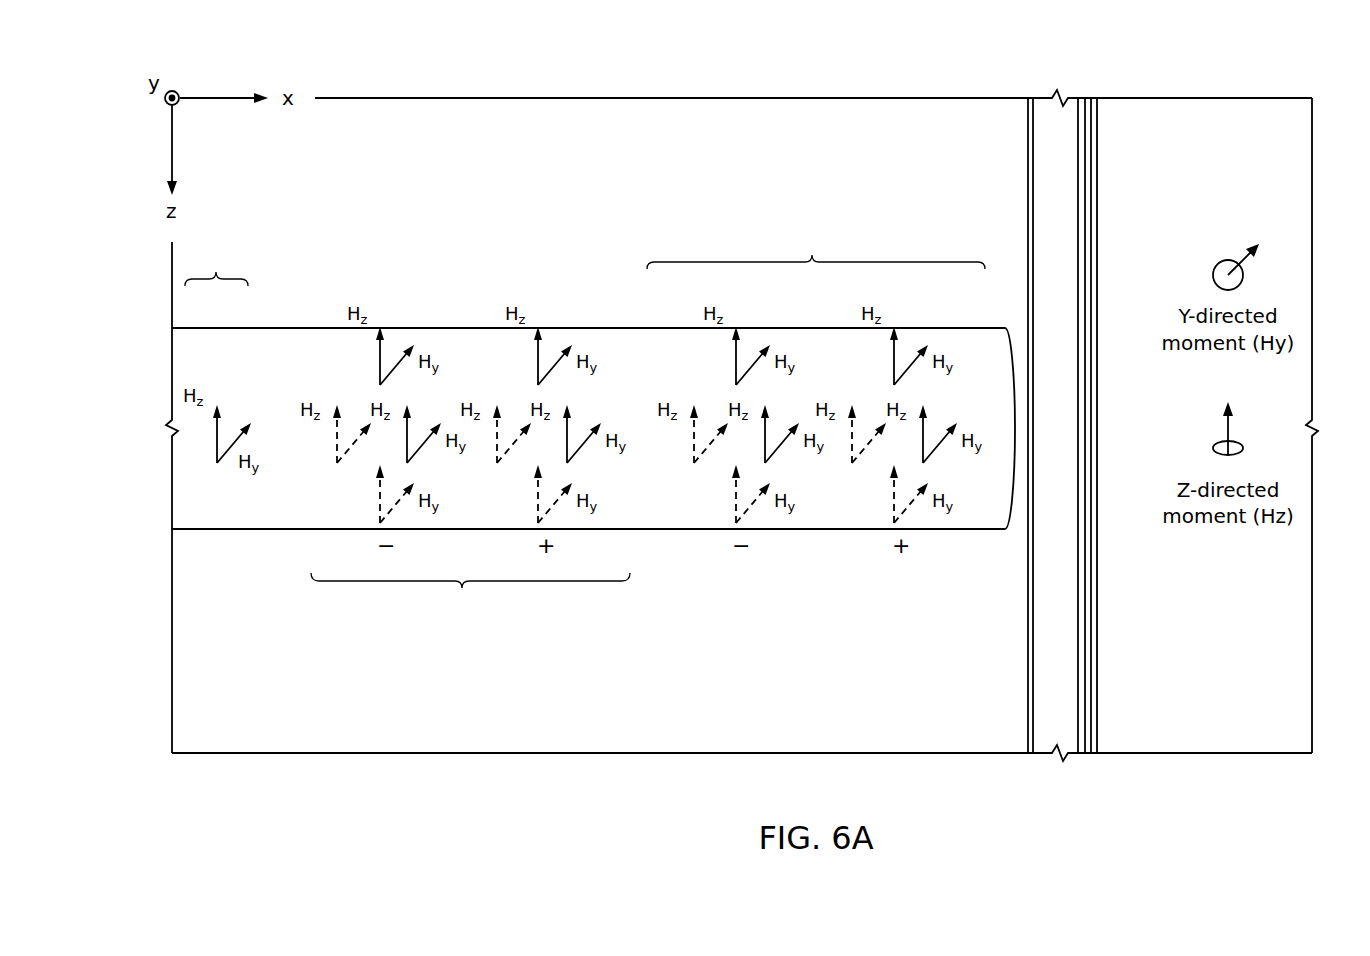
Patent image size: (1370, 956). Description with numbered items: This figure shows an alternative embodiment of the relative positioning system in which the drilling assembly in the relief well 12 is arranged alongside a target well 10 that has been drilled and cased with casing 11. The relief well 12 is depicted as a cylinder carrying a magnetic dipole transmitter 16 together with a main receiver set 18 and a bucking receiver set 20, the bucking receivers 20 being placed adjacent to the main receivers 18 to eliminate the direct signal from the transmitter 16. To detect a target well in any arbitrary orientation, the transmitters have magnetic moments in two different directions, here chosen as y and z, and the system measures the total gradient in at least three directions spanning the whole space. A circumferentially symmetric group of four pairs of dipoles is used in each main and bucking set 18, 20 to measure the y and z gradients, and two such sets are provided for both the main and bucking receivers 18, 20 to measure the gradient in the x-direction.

The well 10 is at (1090, 86).
The casing 11 is at (1027, 156).
The relief well 12 is at (463, 328).
The magnetic dipole transmitter 16 is at (216, 272).
The magnetic dipole receivers 18 is at (812, 255).
The bucking receivers 20 is at (462, 588).